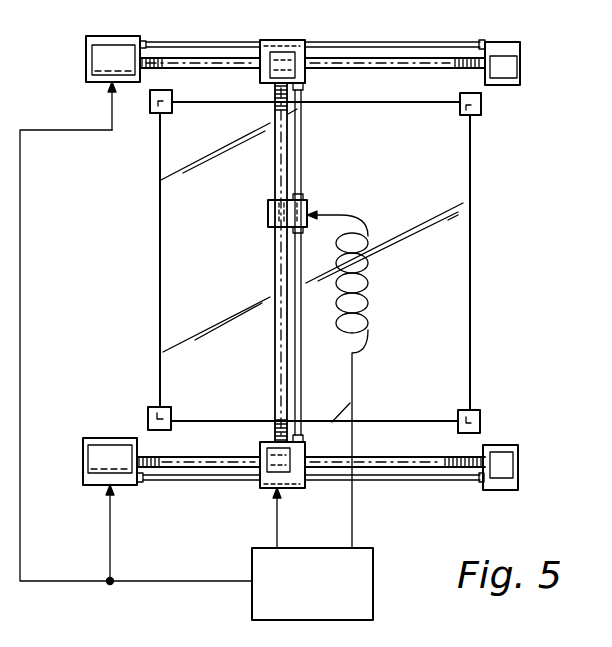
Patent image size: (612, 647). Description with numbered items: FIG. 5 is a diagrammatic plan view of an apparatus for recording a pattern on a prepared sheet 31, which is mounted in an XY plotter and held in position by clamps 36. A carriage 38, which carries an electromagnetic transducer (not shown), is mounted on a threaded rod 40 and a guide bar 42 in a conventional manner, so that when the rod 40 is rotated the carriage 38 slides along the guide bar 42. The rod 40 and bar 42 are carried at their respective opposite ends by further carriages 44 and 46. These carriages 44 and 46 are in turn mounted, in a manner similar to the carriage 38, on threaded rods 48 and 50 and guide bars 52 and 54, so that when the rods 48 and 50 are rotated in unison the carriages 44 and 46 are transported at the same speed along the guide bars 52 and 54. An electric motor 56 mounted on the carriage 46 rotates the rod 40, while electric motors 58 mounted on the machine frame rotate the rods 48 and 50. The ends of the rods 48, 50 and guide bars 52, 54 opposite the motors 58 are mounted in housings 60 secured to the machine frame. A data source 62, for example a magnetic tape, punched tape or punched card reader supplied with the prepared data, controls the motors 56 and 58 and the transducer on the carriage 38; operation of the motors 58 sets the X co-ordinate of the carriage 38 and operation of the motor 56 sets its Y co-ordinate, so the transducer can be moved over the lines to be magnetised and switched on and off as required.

The sheet 31 is at (455, 252).
The clamps 36 is at (158, 112).
The carriage 38 is at (307, 203).
The threaded rod 40 is at (273, 167).
The guide bar 42 is at (303, 152).
The further carriage 44 is at (290, 40).
The further carriage 46 is at (267, 488).
The threaded rod 48 is at (413, 58).
The threaded rod 50 is at (443, 467).
The guide bar 52 is at (357, 43).
The guide bar 54 is at (385, 482).
The electric motor 56 is at (265, 450).
The electric motors 58 is at (90, 58).
The housing 60 is at (512, 63).
The data source 62 is at (373, 586).